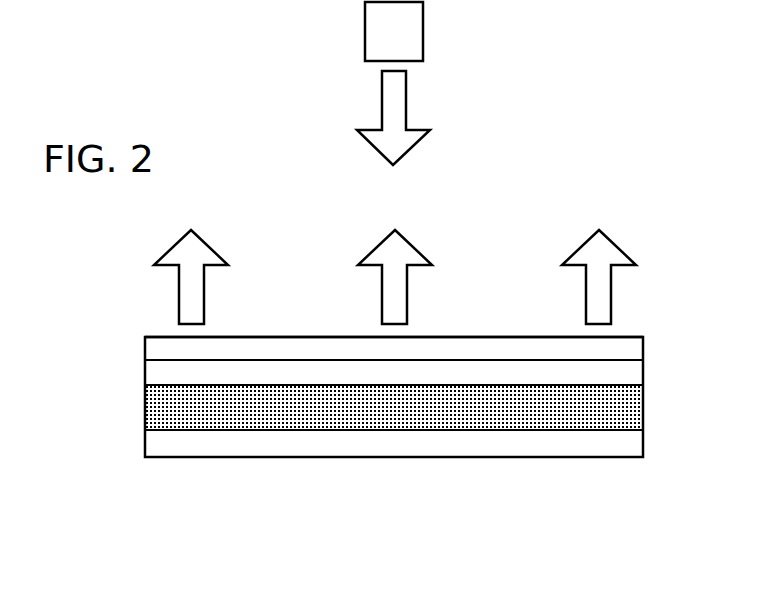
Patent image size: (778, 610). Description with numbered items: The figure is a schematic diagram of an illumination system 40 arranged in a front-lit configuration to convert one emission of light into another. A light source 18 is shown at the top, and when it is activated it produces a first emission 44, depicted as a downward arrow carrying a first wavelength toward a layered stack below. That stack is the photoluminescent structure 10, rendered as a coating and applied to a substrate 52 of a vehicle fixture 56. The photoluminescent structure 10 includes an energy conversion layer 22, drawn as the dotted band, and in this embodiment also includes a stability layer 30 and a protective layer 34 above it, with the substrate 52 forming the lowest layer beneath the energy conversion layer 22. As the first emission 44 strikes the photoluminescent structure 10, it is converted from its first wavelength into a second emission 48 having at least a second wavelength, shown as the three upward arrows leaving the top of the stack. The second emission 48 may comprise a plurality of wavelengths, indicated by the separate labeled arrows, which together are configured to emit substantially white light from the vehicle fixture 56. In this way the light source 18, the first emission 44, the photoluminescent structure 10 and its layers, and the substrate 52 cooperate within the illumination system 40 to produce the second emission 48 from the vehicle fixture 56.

The light source 18 is at (406, 40).
The first emission 44 is at (382, 95).
The illumination system 40 is at (592, 102).
The second emission 48 is at (213, 250).
The photoluminescent structure 10 is at (73, 393).
The vehicle fixture 56 is at (104, 311).
The protective layer 34 is at (638, 350).
The stability layer 30 is at (638, 370).
The energy conversion layer 22 is at (145, 410).
The substrate 52 is at (638, 442).